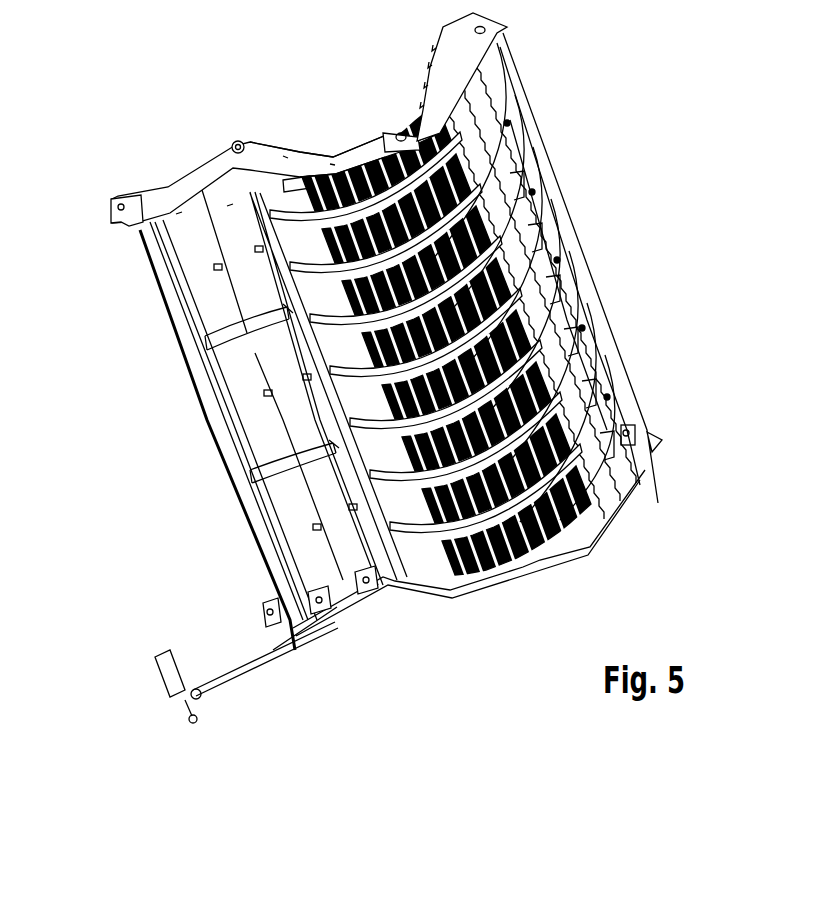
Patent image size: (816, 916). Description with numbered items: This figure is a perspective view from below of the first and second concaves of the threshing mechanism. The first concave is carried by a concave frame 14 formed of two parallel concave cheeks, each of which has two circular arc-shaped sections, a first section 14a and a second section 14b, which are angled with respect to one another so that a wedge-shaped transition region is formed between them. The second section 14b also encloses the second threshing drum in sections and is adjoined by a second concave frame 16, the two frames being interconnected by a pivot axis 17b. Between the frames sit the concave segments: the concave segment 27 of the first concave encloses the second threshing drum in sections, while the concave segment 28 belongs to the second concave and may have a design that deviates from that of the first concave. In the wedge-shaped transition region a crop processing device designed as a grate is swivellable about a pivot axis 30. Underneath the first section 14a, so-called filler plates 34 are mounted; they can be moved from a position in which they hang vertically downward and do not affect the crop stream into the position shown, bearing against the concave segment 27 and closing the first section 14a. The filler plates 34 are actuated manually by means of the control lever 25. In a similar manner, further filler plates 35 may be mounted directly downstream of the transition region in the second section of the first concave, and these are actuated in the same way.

The concave frame 14 is at (232, 207).
The first section 14a is at (147, 205).
The second section 14b is at (318, 160).
The second concave frame 16 is at (615, 477).
The pivot axis 17b is at (398, 130).
The control lever 25 is at (273, 657).
The concave segment 27 is at (500, 560).
The concave segment 28 is at (590, 500).
The pivot axis 30 is at (238, 143).
The filler plates 34 is at (215, 230).
The filler plates 35 is at (305, 183).